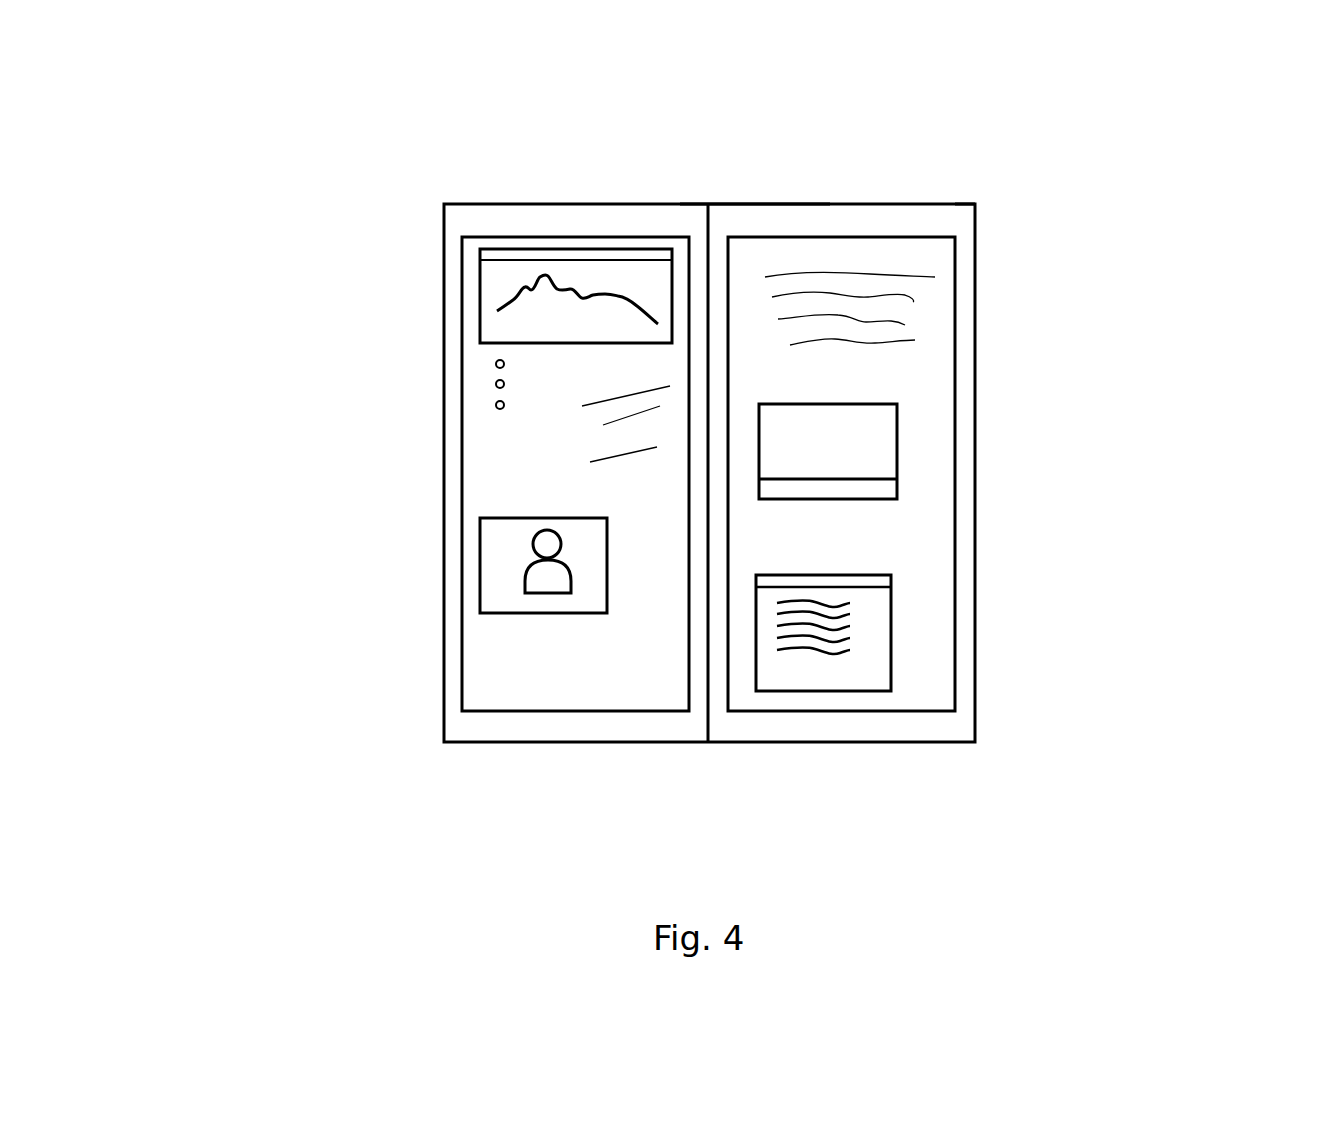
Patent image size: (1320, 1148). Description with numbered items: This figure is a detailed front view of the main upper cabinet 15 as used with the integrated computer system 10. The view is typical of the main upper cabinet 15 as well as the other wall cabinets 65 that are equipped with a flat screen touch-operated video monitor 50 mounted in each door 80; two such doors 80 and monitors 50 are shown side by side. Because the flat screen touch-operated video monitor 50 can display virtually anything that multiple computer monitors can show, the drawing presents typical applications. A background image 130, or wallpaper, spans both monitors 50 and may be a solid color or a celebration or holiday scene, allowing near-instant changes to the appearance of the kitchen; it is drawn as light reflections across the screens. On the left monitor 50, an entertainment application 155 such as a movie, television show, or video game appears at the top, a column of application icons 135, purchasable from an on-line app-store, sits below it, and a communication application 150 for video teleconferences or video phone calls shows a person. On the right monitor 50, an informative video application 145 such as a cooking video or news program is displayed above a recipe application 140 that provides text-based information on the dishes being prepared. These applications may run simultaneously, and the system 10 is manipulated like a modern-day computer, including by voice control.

The integrated computer system 10 is at (362, 825).
The main upper cabinet 15 is at (444, 205).
The flat screen touch-operated video monitor 50 is at (569, 368).
The wall cabinets 65 is at (977, 208).
The door 80 is at (688, 204).
The background image 130 is at (612, 430).
The application icons 135 is at (495, 365).
The recipe application 140 is at (862, 625).
The informative video application 145 is at (856, 458).
The communication application 150 is at (537, 565).
The entertainment application 155 is at (547, 294).